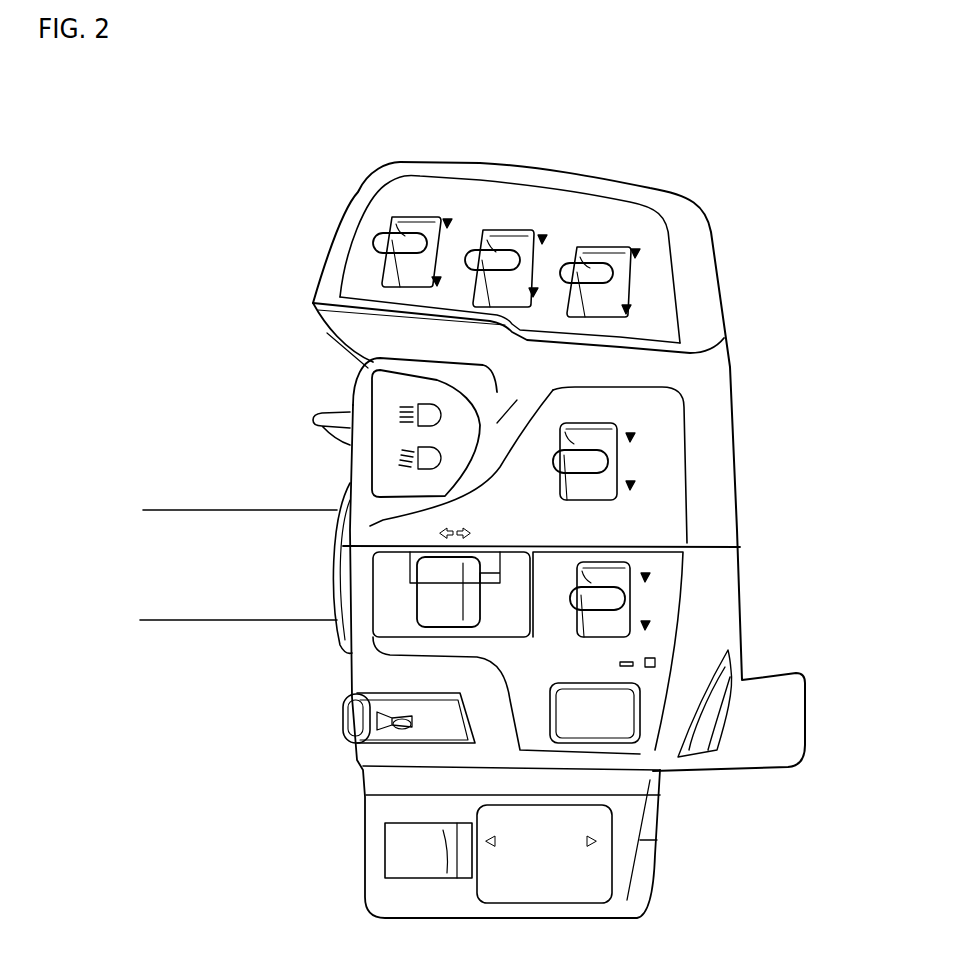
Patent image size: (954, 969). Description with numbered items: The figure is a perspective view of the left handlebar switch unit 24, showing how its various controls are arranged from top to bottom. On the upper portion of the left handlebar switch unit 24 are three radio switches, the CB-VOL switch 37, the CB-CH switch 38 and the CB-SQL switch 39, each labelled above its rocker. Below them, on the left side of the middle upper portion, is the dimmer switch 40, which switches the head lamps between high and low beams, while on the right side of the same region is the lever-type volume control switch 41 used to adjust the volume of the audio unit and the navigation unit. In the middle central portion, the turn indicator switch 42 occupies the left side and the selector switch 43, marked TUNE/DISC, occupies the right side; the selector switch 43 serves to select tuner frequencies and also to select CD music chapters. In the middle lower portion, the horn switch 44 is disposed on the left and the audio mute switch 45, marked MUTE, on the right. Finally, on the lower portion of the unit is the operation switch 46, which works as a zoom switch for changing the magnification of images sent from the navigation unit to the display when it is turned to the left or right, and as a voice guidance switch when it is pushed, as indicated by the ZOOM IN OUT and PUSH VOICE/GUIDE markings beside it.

The left handlebar switch unit 24 is at (453, 117).
The radio switch (CB-VOL) 37 is at (377, 238).
The radio switch (CB-CH) 38 is at (527, 273).
The radio switch (CB-SQL) 39 is at (617, 273).
The dimmer switch 40 is at (388, 387).
The volume control switch 41 is at (603, 447).
The turn indicator switch 42 is at (443, 597).
The selector switch (TUNE/DISC) 43 is at (607, 583).
The horn switch 44 is at (367, 712).
The audio mute switch 45 is at (613, 720).
The operation switch 46 is at (395, 853).